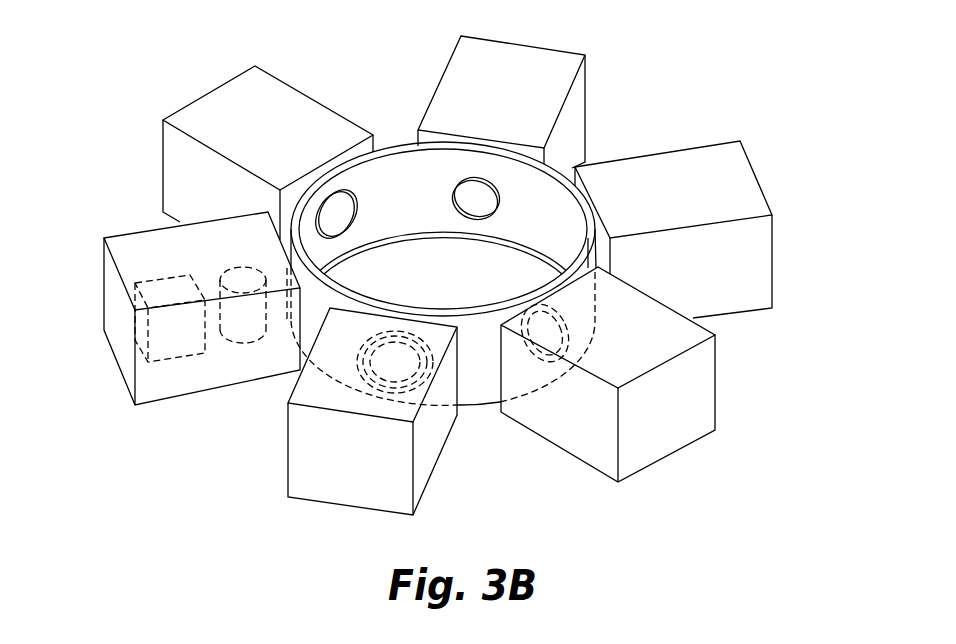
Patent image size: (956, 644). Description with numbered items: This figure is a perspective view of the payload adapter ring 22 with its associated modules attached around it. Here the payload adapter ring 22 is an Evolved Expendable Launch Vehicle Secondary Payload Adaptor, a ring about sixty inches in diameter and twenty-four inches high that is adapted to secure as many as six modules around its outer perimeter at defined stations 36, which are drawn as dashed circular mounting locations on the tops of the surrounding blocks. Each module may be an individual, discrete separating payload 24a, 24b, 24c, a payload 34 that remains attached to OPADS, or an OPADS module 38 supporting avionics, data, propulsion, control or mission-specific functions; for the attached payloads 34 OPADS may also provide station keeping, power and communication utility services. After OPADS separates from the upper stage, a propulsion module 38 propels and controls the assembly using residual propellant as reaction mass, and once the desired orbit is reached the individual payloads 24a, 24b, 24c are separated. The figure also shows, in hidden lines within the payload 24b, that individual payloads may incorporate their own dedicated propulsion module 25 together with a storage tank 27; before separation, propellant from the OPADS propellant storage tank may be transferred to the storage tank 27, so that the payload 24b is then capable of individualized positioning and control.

The payload adapter ring 22 is at (393, 152).
The separating payload 24a is at (220, 112).
The separating payload 24b is at (135, 235).
The separating payload 24c is at (327, 495).
The dedicated propulsion module 25 is at (175, 362).
The storage tank 27 is at (243, 332).
The attached payload 34 is at (553, 62).
The station 36 is at (545, 330).
The OPADS module 38 is at (677, 433).